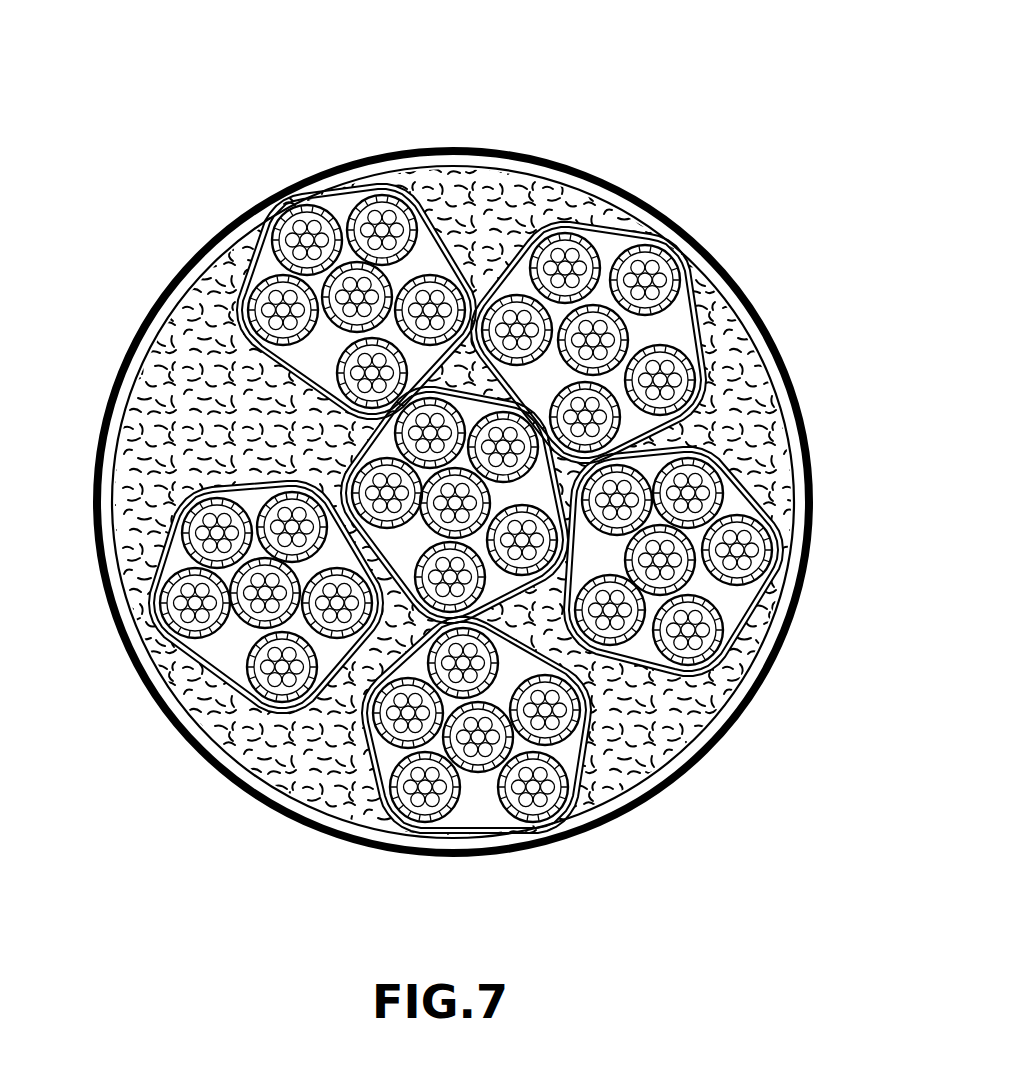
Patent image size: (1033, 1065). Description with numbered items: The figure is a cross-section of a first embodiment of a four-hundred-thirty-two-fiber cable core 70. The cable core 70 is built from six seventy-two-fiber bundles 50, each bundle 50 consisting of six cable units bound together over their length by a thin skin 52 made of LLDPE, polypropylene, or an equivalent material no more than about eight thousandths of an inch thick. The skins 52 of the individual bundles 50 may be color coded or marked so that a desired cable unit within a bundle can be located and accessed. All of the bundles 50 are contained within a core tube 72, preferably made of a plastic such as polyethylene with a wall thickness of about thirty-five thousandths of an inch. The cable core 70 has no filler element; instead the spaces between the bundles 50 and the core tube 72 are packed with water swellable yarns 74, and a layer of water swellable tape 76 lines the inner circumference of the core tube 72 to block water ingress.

The cable core 70 is at (593, 124).
The core tube 72 is at (680, 230).
The water swellable yarns 74 is at (660, 713).
The water swellable tape 76 is at (647, 787).
The 72-fiber bundle 50 is at (726, 460).
The bundle skin 52 is at (523, 253).